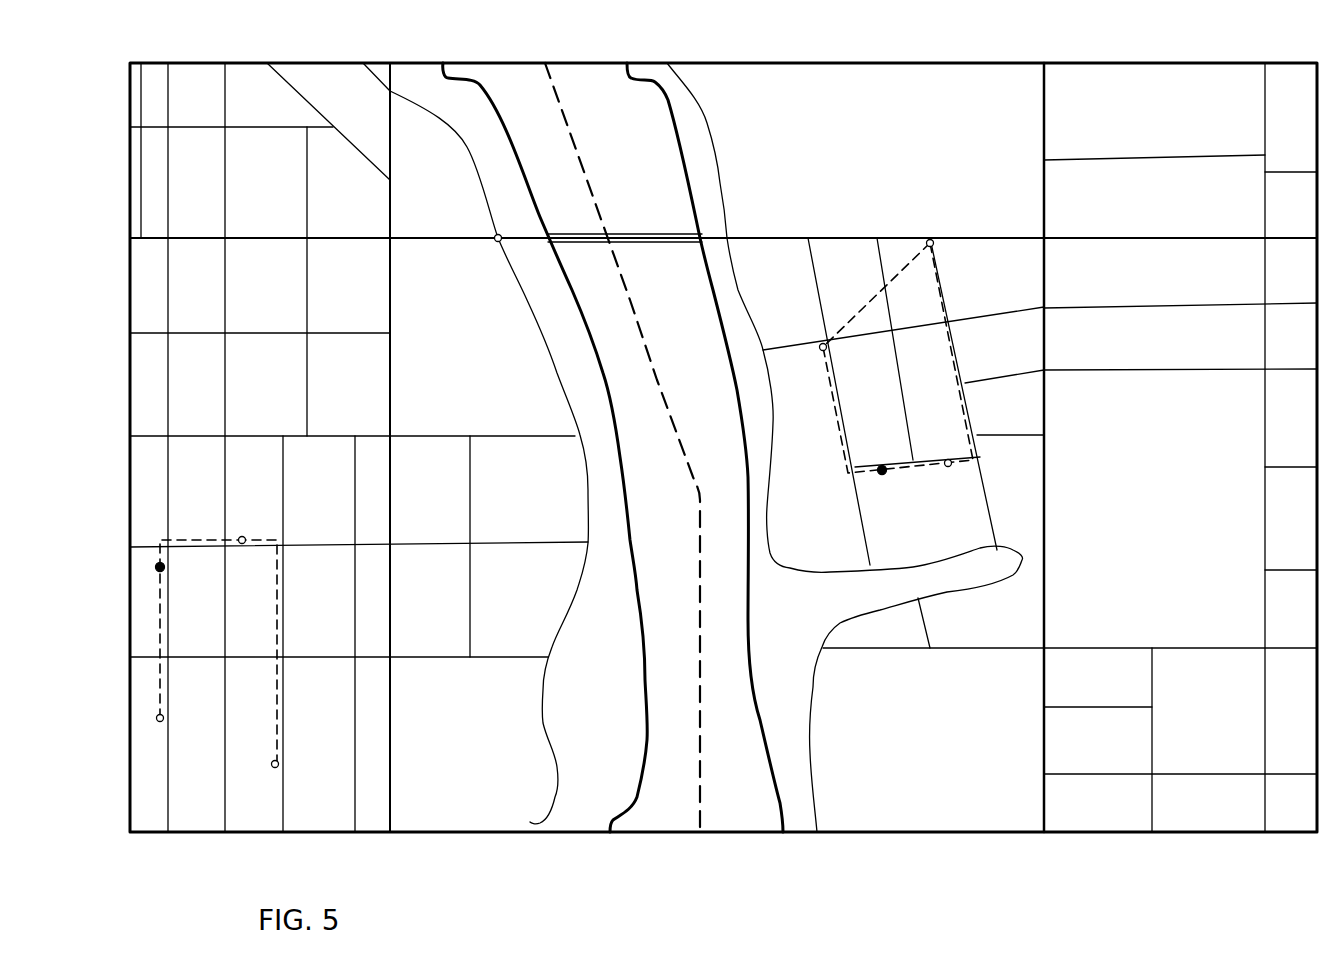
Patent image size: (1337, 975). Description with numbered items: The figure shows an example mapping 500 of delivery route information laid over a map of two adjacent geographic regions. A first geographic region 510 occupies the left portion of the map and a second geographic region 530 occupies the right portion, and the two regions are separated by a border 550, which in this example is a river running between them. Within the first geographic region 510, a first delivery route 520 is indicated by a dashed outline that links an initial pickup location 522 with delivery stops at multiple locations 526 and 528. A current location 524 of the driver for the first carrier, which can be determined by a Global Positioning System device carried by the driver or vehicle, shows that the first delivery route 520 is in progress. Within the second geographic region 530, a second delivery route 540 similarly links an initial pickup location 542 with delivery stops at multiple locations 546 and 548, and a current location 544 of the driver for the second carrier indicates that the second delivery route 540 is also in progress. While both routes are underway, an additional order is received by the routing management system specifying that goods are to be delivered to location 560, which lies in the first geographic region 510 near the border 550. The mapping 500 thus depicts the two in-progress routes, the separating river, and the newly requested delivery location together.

The mapping 500 is at (196, 48).
The first geographic region 510 is at (700, 838).
The second geographic region 530 is at (1317, 838).
The first delivery route 520 is at (294, 618).
The initial pickup location 522 is at (162, 721).
The current location 524 is at (163, 570).
The delivery stop location 526 is at (242, 536).
The delivery stop location 528 is at (276, 767).
The second delivery route 540 is at (963, 302).
The initial pickup location 542 is at (823, 351).
The current location 544 is at (882, 474).
The delivery stop location 546 is at (948, 467).
The delivery stop location 548 is at (929, 239).
The border 550 is at (701, 756).
The delivery location 560 is at (497, 243).